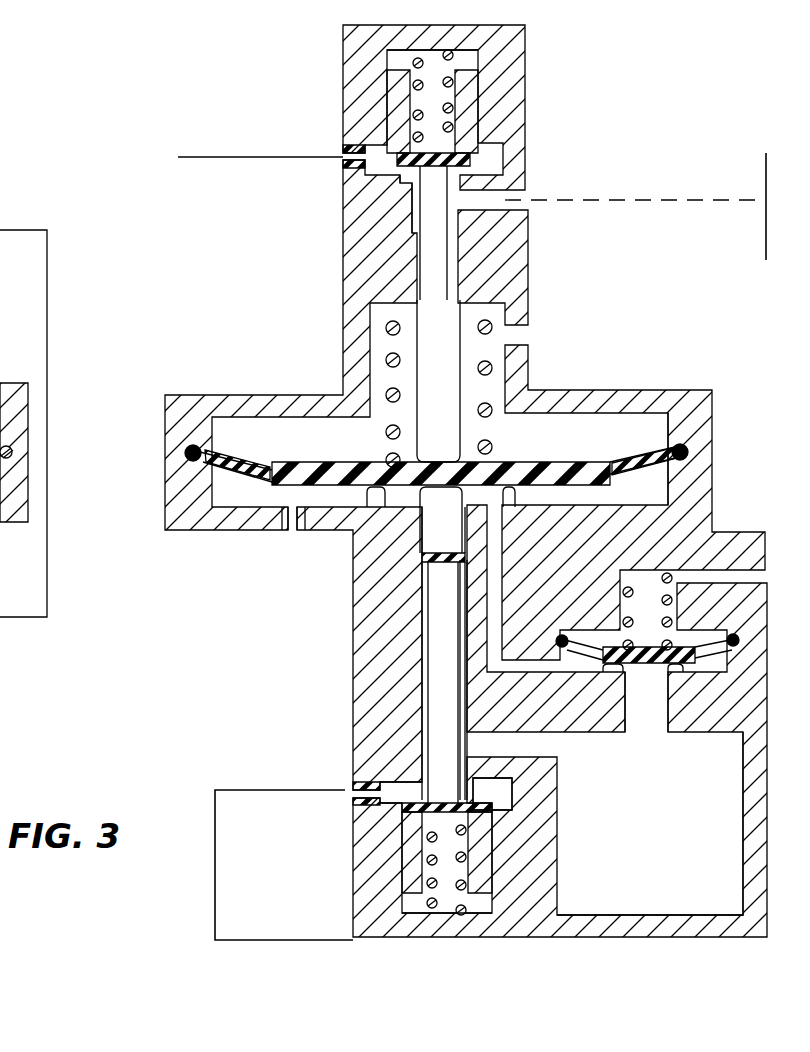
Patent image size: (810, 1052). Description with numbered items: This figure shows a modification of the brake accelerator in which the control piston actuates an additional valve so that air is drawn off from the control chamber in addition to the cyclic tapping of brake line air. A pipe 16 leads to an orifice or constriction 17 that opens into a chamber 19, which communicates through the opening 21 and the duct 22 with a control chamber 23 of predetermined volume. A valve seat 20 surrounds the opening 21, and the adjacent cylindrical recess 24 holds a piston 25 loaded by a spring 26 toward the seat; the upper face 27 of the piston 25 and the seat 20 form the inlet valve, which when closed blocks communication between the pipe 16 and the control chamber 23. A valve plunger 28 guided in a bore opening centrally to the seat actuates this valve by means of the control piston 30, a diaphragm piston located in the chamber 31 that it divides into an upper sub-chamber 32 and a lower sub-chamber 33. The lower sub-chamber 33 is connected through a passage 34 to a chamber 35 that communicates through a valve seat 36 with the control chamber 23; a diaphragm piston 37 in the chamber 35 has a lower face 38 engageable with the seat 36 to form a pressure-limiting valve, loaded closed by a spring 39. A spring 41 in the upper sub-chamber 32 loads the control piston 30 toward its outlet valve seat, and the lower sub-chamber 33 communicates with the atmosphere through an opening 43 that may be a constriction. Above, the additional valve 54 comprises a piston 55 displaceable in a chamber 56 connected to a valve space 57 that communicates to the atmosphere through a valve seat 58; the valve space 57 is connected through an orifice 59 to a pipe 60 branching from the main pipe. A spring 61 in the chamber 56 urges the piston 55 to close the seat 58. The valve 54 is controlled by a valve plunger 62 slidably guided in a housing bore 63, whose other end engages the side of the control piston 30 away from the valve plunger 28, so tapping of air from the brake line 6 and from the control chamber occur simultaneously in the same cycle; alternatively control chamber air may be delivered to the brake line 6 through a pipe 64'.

The brake line 6 is at (766, 175).
The pipe 16 is at (232, 875).
The orifice or constriction 17 is at (358, 800).
The chamber 19 is at (512, 795).
The valve seat 20 is at (380, 800).
The opening 21 is at (440, 705).
The duct 22 is at (520, 750).
The control chamber 23 is at (738, 822).
The cylindrical recess 24 is at (405, 885).
The piston 25 is at (492, 862).
The spring 26 is at (450, 908).
The upper face or surface 27 is at (494, 816).
The valve plunger 28 is at (455, 654).
The control piston 30 is at (538, 462).
The chamber 31 is at (636, 440).
The upper sub-chamber 32 is at (272, 413).
The lower sub-chamber 33 is at (665, 478).
The passage 34 is at (493, 590).
The chamber 35 is at (610, 676).
The valve seat 36 is at (678, 676).
The diaphragm piston 37 is at (735, 647).
The lower face 38 is at (650, 673).
The spring 39 is at (628, 592).
The spring 41 is at (386, 328).
The opening 43 is at (292, 532).
The valve 54 is at (518, 92).
The piston 55 is at (467, 117).
The chamber 56 is at (470, 62).
The valve space 57 is at (498, 158).
The valve seat 58 is at (347, 203).
The orifice 59 is at (343, 150).
The pipe 60 is at (260, 173).
The spring 61 is at (390, 70).
The valve plunger 62 is at (450, 422).
The housing bore 63 is at (458, 247).
The pipe 64' is at (632, 174).